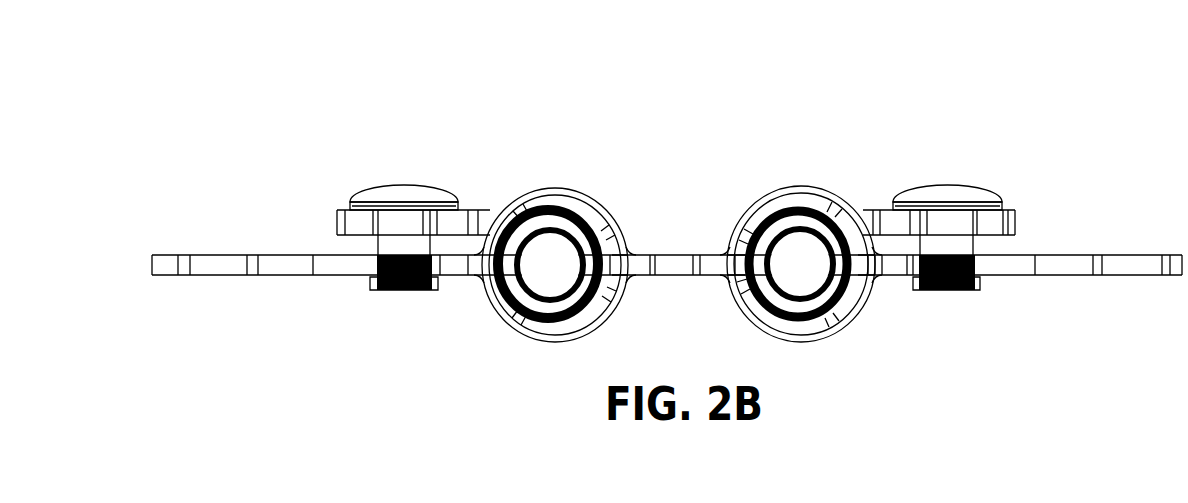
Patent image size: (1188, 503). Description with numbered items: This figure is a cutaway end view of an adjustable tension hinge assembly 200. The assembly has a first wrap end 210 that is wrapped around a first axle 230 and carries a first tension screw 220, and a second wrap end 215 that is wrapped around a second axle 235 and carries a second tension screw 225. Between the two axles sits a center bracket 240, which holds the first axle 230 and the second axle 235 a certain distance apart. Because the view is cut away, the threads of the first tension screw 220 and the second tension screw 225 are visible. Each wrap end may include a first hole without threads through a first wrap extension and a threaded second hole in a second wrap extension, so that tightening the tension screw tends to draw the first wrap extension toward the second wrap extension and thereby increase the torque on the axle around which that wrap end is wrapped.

The hinge assembly 200 is at (287, 81).
The first wrap end 210 is at (265, 253).
The second wrap end 215 is at (1098, 255).
The first tension screw 220 is at (398, 185).
The second tension screw 225 is at (942, 183).
The first axle 230 is at (550, 203).
The second axle 235 is at (795, 220).
The center bracket 240 is at (682, 252).